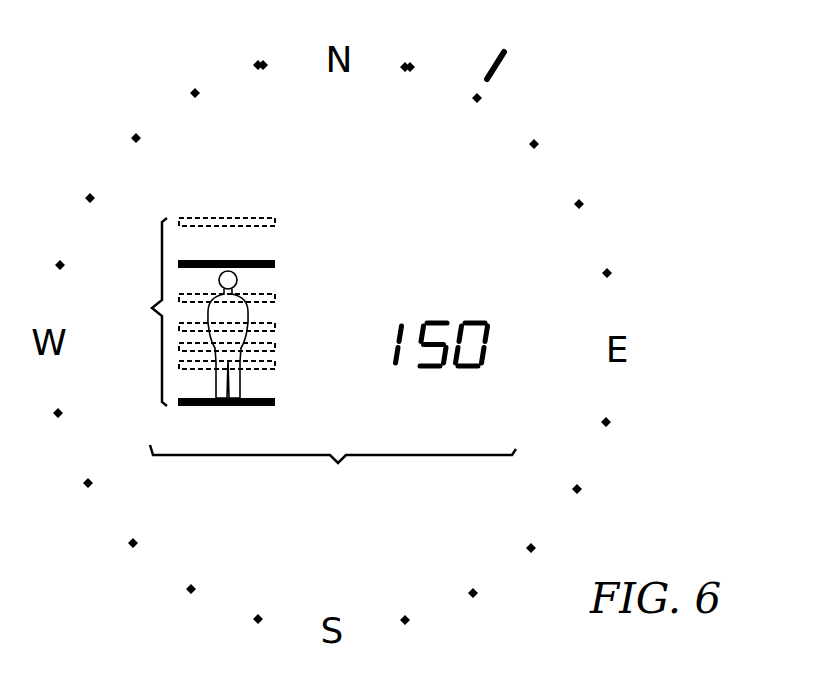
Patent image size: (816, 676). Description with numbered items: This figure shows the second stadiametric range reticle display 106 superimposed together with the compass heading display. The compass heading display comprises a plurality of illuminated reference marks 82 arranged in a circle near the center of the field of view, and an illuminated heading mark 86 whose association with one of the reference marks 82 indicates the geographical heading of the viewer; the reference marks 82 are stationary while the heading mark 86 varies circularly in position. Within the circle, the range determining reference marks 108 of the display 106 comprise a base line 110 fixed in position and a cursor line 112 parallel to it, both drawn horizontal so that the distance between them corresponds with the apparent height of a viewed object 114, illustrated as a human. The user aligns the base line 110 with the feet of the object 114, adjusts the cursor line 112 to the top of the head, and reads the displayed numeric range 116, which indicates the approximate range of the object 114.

The reference marks 82 is at (263, 65).
The heading mark 86 is at (503, 66).
The second stadiametric range reticle display 106 is at (333, 472).
The reference marks 108 is at (186, 312).
The base line 110 is at (275, 402).
The cursor line 112 is at (275, 263).
The viewed object 114 is at (248, 318).
The numeric range figure 116 is at (489, 345).